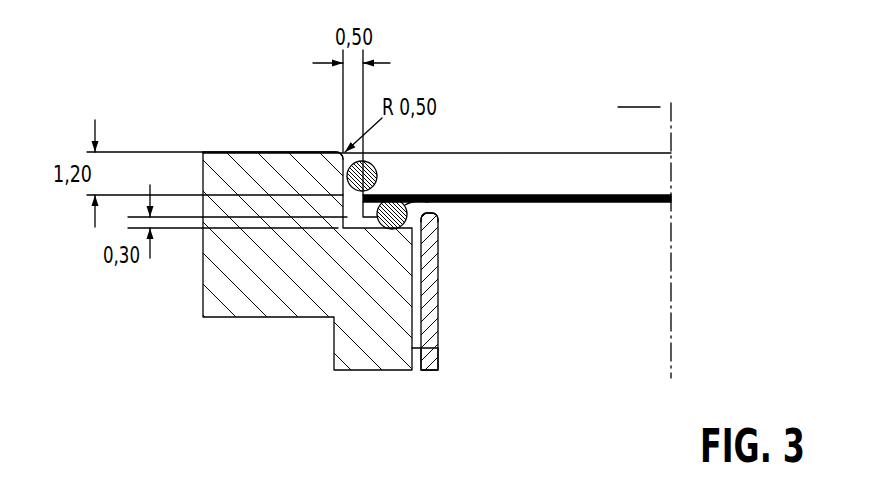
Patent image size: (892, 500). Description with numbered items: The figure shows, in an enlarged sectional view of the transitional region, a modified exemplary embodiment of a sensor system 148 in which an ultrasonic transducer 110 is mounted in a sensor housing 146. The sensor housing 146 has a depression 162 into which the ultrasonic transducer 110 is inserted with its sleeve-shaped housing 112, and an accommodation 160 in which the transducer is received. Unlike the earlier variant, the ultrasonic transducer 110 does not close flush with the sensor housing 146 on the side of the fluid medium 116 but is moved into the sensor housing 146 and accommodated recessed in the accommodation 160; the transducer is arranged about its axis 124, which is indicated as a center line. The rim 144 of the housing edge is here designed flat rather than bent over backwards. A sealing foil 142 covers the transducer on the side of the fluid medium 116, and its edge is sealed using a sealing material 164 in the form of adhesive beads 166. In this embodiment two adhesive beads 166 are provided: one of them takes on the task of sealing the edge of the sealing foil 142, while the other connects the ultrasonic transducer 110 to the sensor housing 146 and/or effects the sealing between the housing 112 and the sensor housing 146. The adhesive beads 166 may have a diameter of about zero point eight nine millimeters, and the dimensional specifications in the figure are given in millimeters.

The ultrasonic transducer 110 is at (300, 114).
The housing 112 is at (440, 295).
The fluid medium 116 is at (639, 93).
The axis 124 is at (671, 298).
The sealing foil 142 is at (583, 195).
The rim 144 is at (442, 217).
The sensor housing 146 is at (245, 283).
The sensor system 148 is at (223, 114).
The accommodation 160 is at (439, 348).
The depression 162 is at (355, 214).
The sealing material 164 is at (375, 160).
The adhesive beads 166 is at (398, 197).